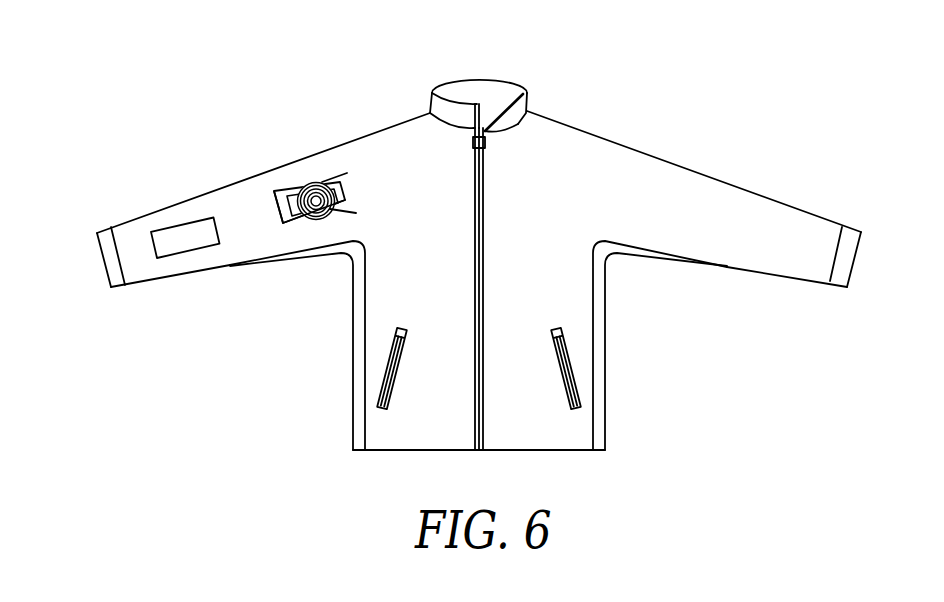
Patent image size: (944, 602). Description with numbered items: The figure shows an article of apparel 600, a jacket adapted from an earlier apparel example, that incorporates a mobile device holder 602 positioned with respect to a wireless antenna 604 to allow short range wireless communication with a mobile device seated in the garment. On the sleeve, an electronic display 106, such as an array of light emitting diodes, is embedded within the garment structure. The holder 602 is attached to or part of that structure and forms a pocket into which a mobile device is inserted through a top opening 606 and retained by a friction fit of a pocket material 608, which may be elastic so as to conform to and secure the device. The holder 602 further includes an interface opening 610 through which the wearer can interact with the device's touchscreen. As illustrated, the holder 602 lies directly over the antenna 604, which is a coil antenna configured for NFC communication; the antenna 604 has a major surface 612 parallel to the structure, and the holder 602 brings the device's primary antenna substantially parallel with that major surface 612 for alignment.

The article of apparel 600 is at (682, 96).
The electronic display 106 is at (187, 246).
The mobile device holder 602 is at (276, 191).
The wireless antenna 604 is at (324, 183).
The top opening 606 is at (347, 194).
The pocket material 608 is at (285, 223).
The interface opening 610 is at (304, 188).
The major surface 612 is at (331, 208).